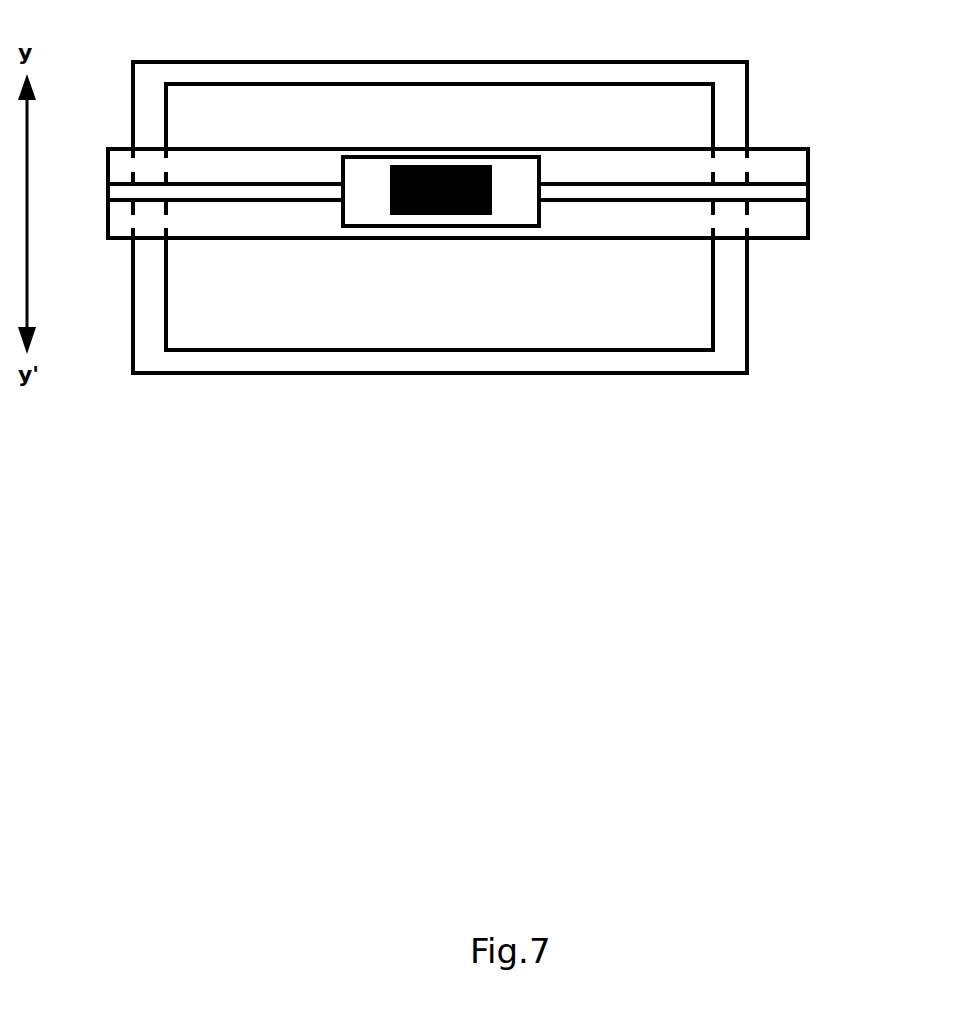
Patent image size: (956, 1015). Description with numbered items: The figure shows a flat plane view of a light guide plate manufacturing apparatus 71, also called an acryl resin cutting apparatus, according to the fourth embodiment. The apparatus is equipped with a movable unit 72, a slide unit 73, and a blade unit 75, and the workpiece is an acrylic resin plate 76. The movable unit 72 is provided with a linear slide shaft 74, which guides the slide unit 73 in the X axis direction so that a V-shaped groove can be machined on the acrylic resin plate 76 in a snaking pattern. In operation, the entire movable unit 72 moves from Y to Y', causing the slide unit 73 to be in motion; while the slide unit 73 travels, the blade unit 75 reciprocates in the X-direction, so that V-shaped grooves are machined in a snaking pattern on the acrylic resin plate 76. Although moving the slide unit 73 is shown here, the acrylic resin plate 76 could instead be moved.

The light guide plate manufacturing apparatus 71 is at (459, 197).
The movable unit 72 is at (528, 206).
The slide unit 73 is at (450, 163).
The linear slide shaft 74 is at (490, 180).
The blade unit 75 is at (483, 221).
The acrylic resin plate 76 is at (492, 252).